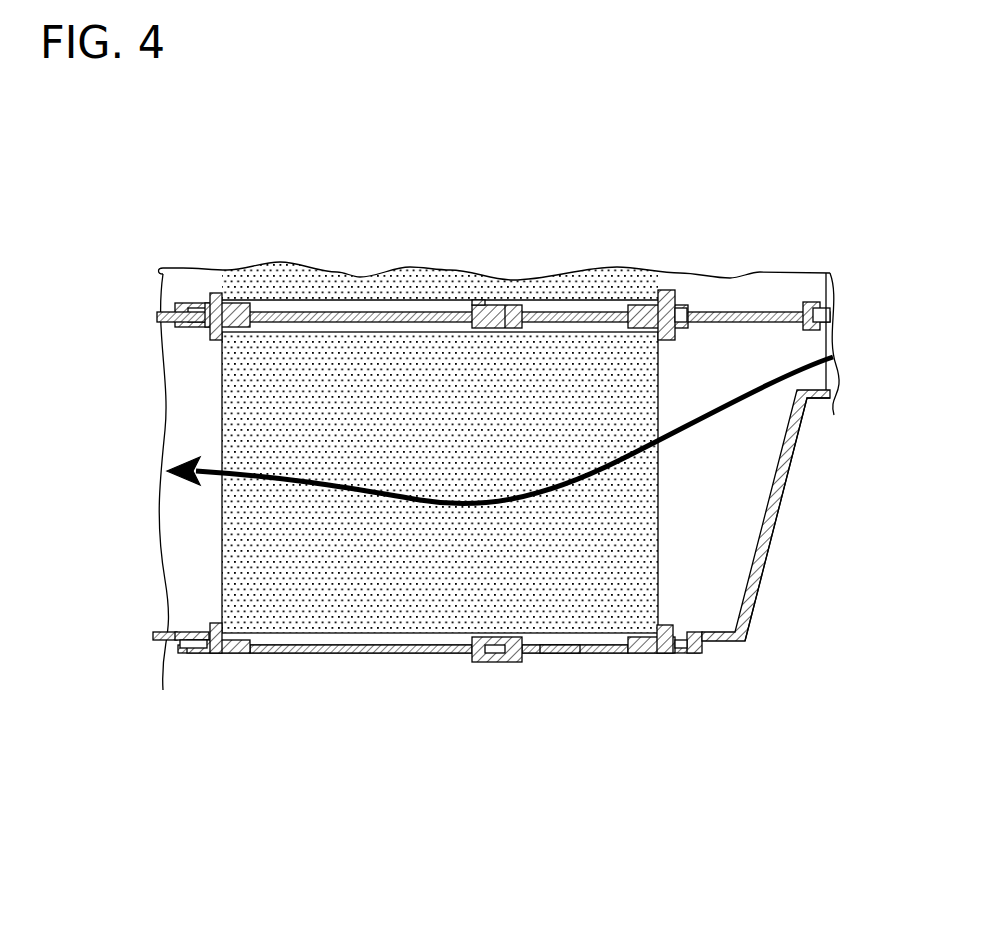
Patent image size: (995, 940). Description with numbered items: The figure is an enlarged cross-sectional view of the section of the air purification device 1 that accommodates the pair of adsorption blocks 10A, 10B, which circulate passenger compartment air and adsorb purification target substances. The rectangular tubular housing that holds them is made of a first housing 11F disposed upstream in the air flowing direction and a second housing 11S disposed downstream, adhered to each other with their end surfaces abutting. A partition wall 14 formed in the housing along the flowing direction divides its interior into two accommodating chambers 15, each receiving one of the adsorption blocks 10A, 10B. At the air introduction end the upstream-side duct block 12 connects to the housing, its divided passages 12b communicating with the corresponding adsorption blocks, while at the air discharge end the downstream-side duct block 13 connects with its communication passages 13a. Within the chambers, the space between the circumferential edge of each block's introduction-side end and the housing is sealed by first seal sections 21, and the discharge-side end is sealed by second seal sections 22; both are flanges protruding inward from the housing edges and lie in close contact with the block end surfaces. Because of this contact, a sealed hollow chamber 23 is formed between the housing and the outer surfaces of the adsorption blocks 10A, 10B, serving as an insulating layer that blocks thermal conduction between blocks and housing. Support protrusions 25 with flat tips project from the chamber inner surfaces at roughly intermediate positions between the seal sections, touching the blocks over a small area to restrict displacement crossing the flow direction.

The air purification device 1 is at (660, 213).
The adsorption block 10A is at (347, 275).
The adsorption block 10B is at (384, 610).
The second housing 11S is at (300, 655).
The first housing 11F is at (614, 655).
The upstream-side duct block 12 is at (758, 575).
The divided passage 12b is at (762, 285).
The downstream-side duct block 13 is at (160, 660).
The communication passage 13a is at (192, 290).
The partition wall 14 is at (420, 312).
The accommodating chamber 15 is at (447, 655).
The first seal section 21 is at (670, 292).
The second seal section 22 is at (214, 293).
The hollow chamber 23 is at (562, 655).
The support protrusion 25 is at (480, 305).